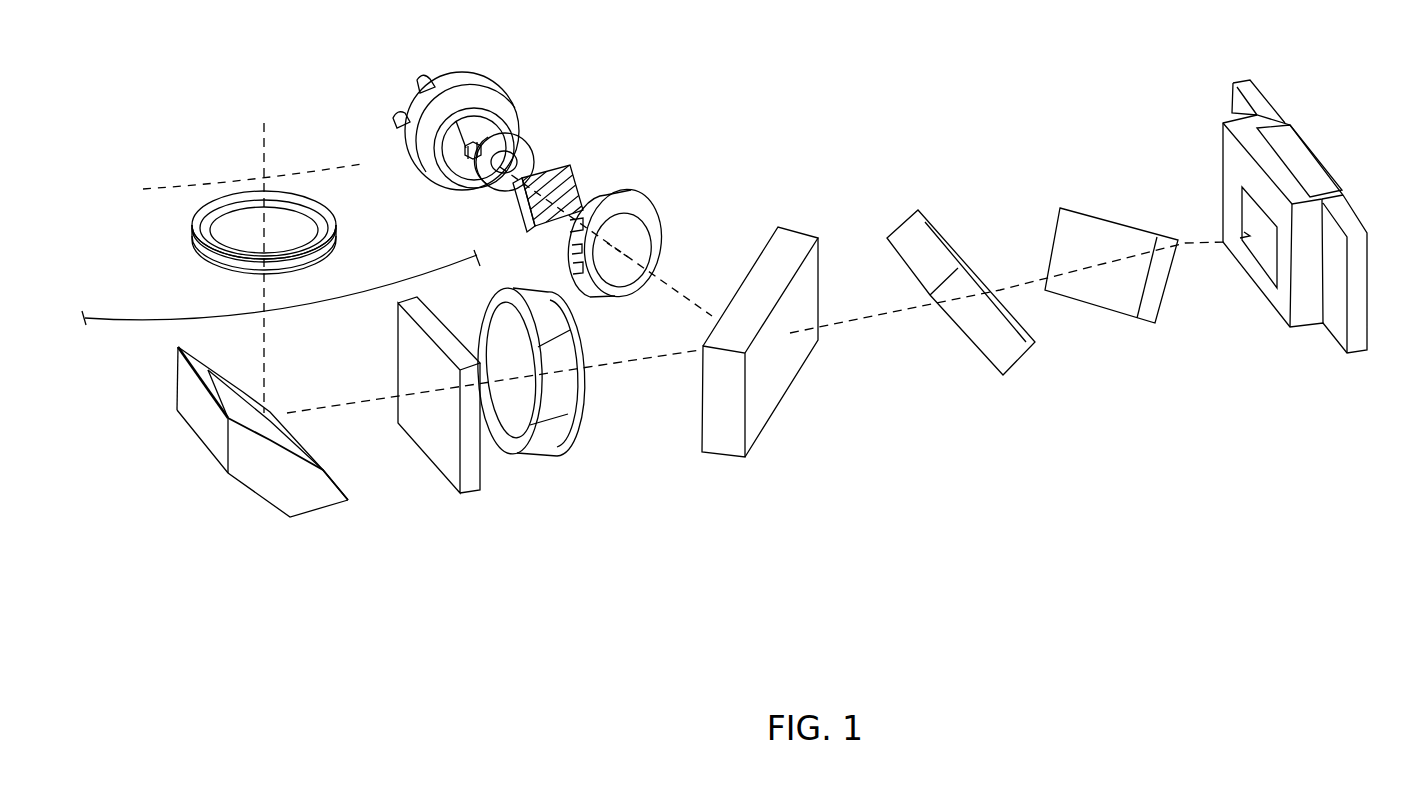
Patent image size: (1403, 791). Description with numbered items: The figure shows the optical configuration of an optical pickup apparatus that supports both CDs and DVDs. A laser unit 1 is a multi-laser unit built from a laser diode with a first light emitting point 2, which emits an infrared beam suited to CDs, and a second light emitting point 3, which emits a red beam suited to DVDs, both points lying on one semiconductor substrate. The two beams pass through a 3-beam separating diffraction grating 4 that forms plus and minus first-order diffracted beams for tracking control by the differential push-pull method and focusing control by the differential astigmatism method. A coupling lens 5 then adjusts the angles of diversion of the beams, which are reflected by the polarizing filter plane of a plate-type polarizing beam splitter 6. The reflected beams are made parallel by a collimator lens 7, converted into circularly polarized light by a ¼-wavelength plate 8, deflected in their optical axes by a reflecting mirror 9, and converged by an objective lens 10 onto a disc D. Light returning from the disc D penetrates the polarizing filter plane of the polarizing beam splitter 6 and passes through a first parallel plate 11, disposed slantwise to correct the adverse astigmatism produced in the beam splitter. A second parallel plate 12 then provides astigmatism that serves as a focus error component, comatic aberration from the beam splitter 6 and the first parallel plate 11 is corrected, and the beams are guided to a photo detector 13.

The laser unit 1 is at (512, 120).
The first light emitting point 2 is at (462, 146).
The second light emitting point 3 is at (481, 143).
The 3-beam separating diffraction grating 4 is at (553, 168).
The coupling lens 5 is at (633, 192).
The plate-type polarizing beam splitter 6 is at (775, 403).
The collimator lens 7 is at (557, 450).
The ¼-wavelength plate 8 is at (437, 473).
The reflecting mirror 9 is at (300, 493).
The objective lens 10 is at (328, 215).
The first parallel plate 11 is at (988, 345).
The second parallel plate 12 is at (1108, 312).
The photo detector 13 is at (1277, 293).
The disc D is at (125, 300).